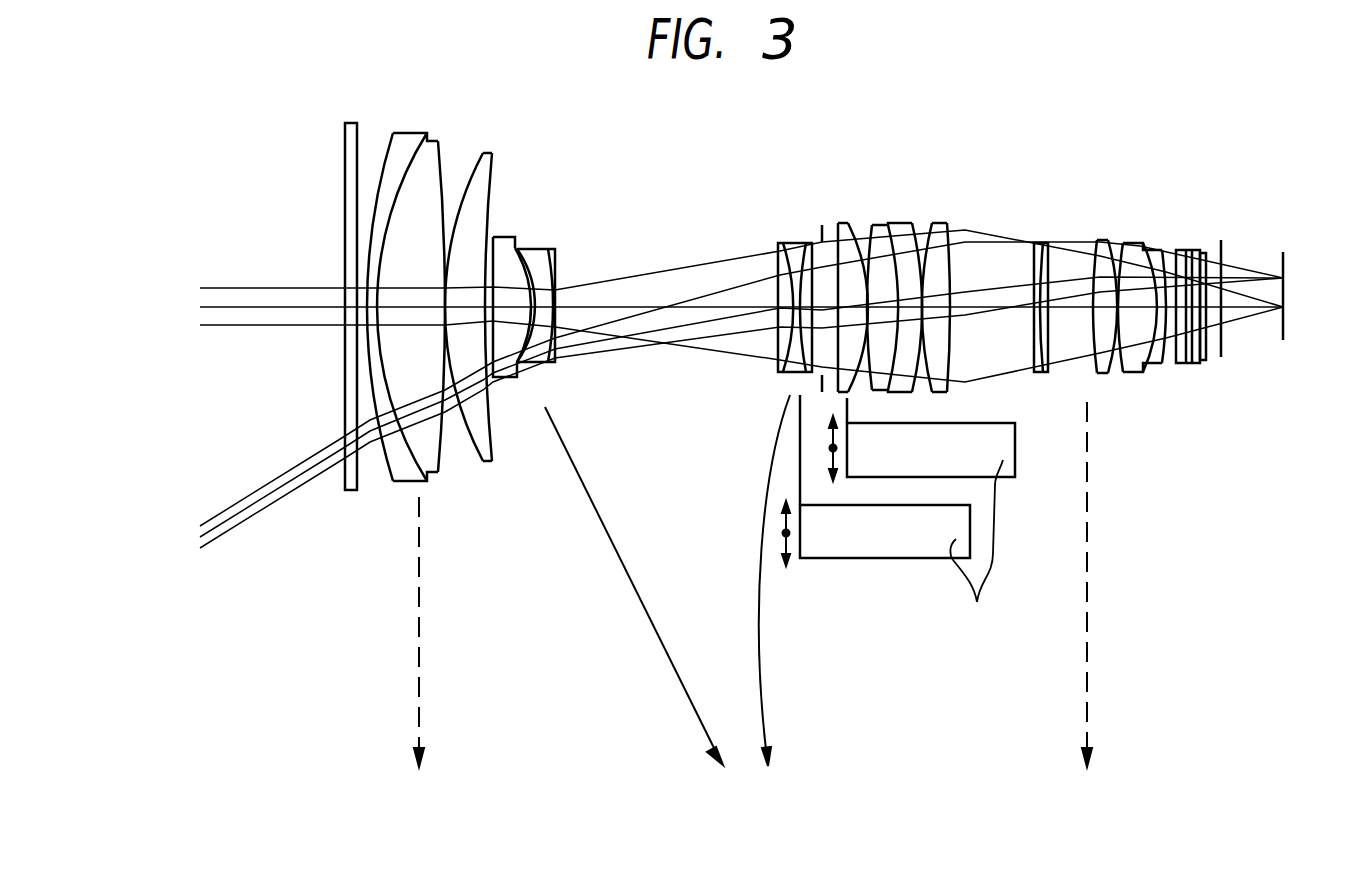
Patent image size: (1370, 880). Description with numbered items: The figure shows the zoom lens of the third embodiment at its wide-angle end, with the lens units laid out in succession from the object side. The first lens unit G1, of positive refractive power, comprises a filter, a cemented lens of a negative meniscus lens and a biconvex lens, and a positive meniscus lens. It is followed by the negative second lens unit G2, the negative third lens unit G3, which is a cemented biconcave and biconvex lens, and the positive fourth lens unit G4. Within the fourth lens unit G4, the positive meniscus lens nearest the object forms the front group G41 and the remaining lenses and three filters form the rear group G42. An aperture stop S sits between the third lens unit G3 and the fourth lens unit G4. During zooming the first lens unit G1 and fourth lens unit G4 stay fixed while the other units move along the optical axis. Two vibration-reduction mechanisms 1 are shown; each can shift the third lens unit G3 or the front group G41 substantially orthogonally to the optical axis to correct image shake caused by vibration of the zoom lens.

The first lens unit G1 is at (502, 113).
The second lens unit G2 is at (560, 226).
The third lens unit G3 is at (790, 243).
The fourth lens unit G4 is at (1021, 230).
The front group G41 is at (847, 227).
The rear group G42 is at (1228, 193).
The aperture stop S is at (821, 291).
The vibration-reduction mechanism 1 is at (1015, 450).